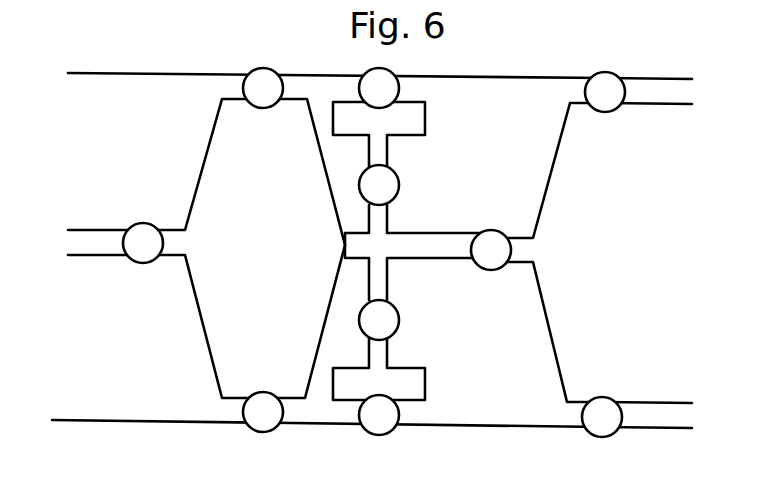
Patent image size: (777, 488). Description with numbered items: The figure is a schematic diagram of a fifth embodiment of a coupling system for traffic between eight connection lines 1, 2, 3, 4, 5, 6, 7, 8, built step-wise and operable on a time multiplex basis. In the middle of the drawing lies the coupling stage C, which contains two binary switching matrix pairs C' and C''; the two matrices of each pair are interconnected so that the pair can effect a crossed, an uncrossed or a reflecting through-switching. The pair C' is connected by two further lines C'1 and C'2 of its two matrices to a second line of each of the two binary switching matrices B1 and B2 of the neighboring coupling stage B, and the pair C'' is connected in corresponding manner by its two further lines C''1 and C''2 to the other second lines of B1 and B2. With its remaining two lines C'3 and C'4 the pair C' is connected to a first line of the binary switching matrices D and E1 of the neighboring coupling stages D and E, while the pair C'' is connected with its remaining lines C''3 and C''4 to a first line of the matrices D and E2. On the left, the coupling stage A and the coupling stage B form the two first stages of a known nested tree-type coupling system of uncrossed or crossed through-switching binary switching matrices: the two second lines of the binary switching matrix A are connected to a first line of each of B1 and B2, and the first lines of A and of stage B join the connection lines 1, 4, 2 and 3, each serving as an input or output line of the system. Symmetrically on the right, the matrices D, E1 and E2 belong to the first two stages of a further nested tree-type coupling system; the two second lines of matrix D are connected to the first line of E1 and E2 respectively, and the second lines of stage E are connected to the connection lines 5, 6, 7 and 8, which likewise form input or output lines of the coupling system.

The connection line 1 is at (329, 73).
The connection line 2 is at (97, 233).
The connection line 3 is at (97, 256).
The connection line 4 is at (319, 420).
The connection line 5 is at (657, 77).
The connection line 6 is at (657, 103).
The connection line 7 is at (656, 404).
The connection line 8 is at (656, 430).
The coupling stage A / binary switching matrix A is at (193, 289).
The coupling stage B is at (262, 461).
The binary switching matrix B1 is at (294, 156).
The binary switching matrix B2 is at (294, 338).
The middle coupling stage C is at (418, 343).
The binary switching matrix pair C' is at (388, 136).
The binary switching matrix pair C'' is at (385, 368).
The further line of binary switching matrix pair C' C'1 is at (367, 77).
The further line of binary switching matrix pair C' C'2 is at (368, 195).
The remaining line of binary switching matrix pair C' C'3 is at (427, 59).
The remaining line of binary switching matrix pair C' C'4 is at (417, 212).
The further line of binary switching matrix pair C'' C''1 is at (368, 307).
The further line of binary switching matrix pair C'' C''2 is at (362, 428).
The remaining line of binary switching matrix pair C'' C''3 is at (419, 287).
The remaining line of binary switching matrix pair C'' C''4 is at (426, 447).
The coupling stage D / binary switching matrix D is at (537, 291).
The coupling stage E is at (603, 461).
The binary switching matrix E1 is at (605, 92).
The binary switching matrix E2 is at (602, 417).